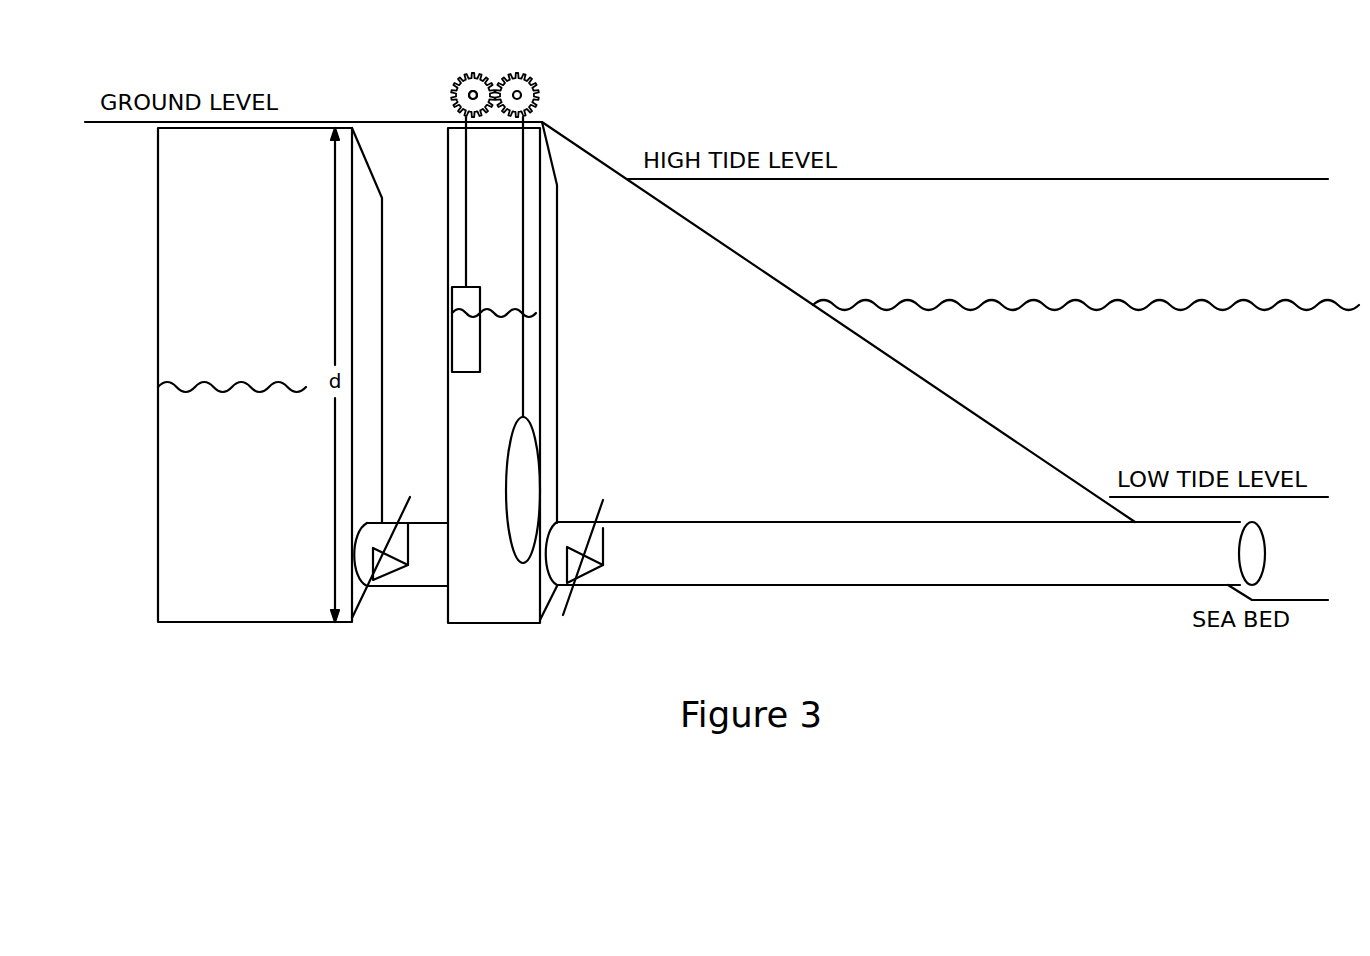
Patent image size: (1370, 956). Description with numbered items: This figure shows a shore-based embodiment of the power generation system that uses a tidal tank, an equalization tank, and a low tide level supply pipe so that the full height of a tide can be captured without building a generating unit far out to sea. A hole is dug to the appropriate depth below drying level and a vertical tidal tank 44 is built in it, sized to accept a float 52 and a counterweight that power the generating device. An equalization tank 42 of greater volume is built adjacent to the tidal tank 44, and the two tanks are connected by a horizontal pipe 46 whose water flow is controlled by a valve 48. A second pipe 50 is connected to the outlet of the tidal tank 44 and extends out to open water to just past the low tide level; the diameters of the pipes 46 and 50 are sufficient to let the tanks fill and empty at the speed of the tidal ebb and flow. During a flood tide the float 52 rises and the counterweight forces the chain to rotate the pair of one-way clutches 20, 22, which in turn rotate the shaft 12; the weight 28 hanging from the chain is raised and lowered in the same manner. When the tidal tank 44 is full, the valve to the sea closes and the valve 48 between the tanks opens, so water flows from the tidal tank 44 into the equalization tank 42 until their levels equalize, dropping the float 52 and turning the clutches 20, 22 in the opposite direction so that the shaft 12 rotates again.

The shaft 12 is at (474, 92).
The one-way clutch 20 is at (456, 92).
The one-way clutch 22 is at (536, 92).
The weight 28 is at (539, 438).
The equalization tank 42 is at (310, 122).
The tidal tank 44 is at (556, 176).
The pipe 46 is at (422, 587).
The valve 48 is at (395, 567).
The second pipe 50 is at (702, 560).
The float 52 is at (480, 350).